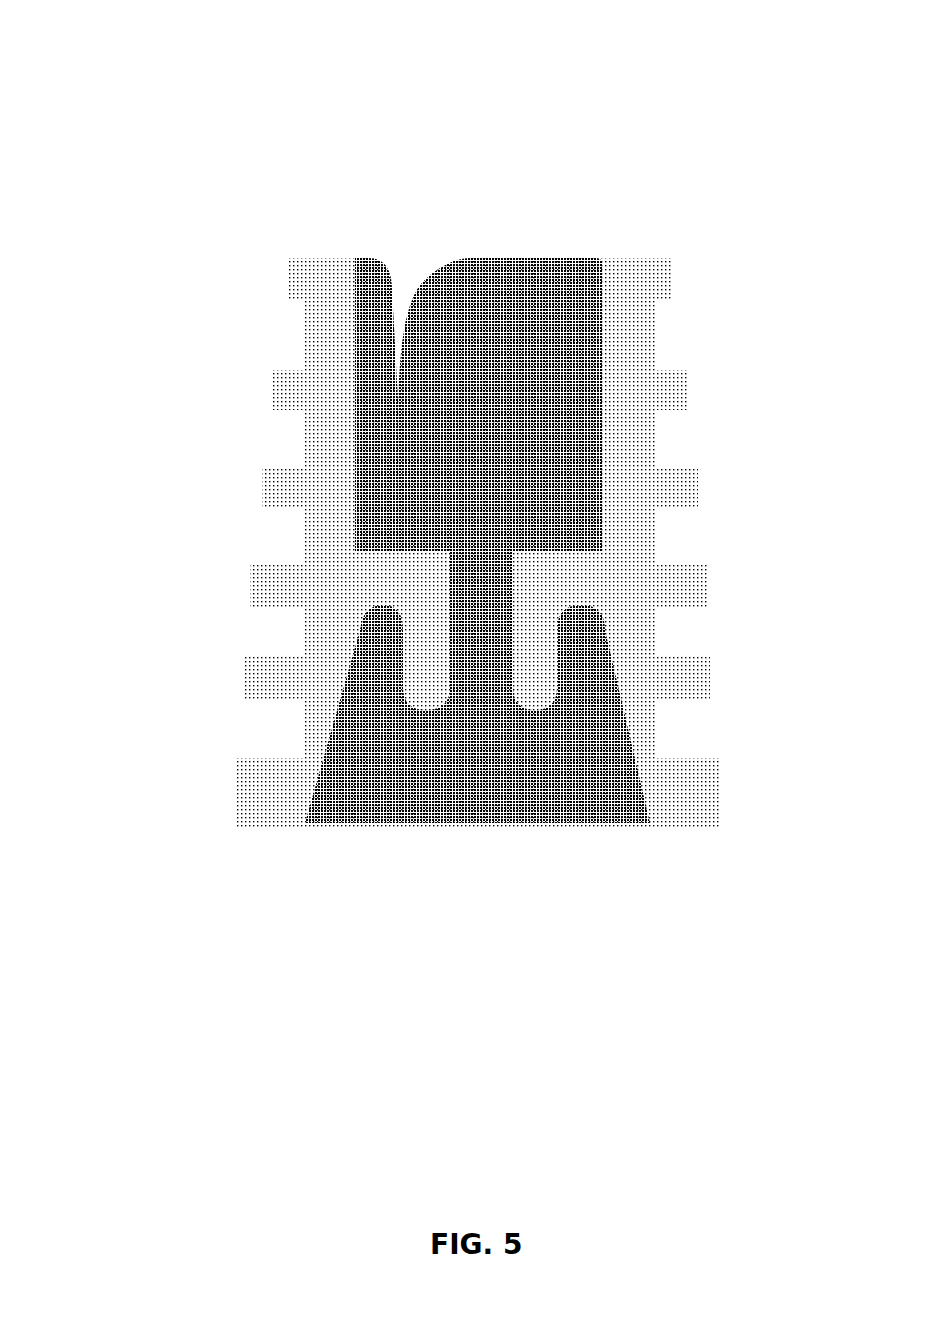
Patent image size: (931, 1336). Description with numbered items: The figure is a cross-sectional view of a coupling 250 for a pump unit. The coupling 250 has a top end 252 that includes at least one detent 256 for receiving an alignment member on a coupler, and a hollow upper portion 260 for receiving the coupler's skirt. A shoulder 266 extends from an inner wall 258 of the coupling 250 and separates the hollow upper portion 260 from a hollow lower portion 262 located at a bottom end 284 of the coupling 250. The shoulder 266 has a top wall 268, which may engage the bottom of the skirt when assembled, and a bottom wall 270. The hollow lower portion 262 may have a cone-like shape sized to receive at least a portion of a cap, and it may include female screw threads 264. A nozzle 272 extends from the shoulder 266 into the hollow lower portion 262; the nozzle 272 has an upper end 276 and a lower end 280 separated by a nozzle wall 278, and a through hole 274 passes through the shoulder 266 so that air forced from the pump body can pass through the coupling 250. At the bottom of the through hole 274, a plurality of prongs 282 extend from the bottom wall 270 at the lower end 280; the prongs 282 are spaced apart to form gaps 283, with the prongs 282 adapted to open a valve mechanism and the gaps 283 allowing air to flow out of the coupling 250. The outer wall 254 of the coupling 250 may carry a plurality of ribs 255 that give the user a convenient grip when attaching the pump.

The coupling 250 is at (148, 88).
The top end 252 is at (660, 258).
The outer wall 254 is at (295, 442).
The ribs 255 is at (263, 487).
The detent 256 is at (395, 327).
The inner wall 258 is at (567, 258).
The hollow upper portion 260 is at (567, 413).
The hollow lower portion 262 is at (587, 730).
The female screw threads 264 is at (617, 815).
The shoulder 266 is at (557, 587).
The top wall 268 is at (573, 552).
The bottom wall 270 is at (603, 627).
The nozzle 272 is at (395, 652).
The through hole 274 is at (487, 552).
The upper end 276 is at (385, 625).
The nozzle wall 278 is at (423, 673).
The lower end 280 is at (547, 695).
The prongs 282 is at (455, 700).
The gaps 283 is at (513, 692).
The bottom end 284 is at (300, 823).